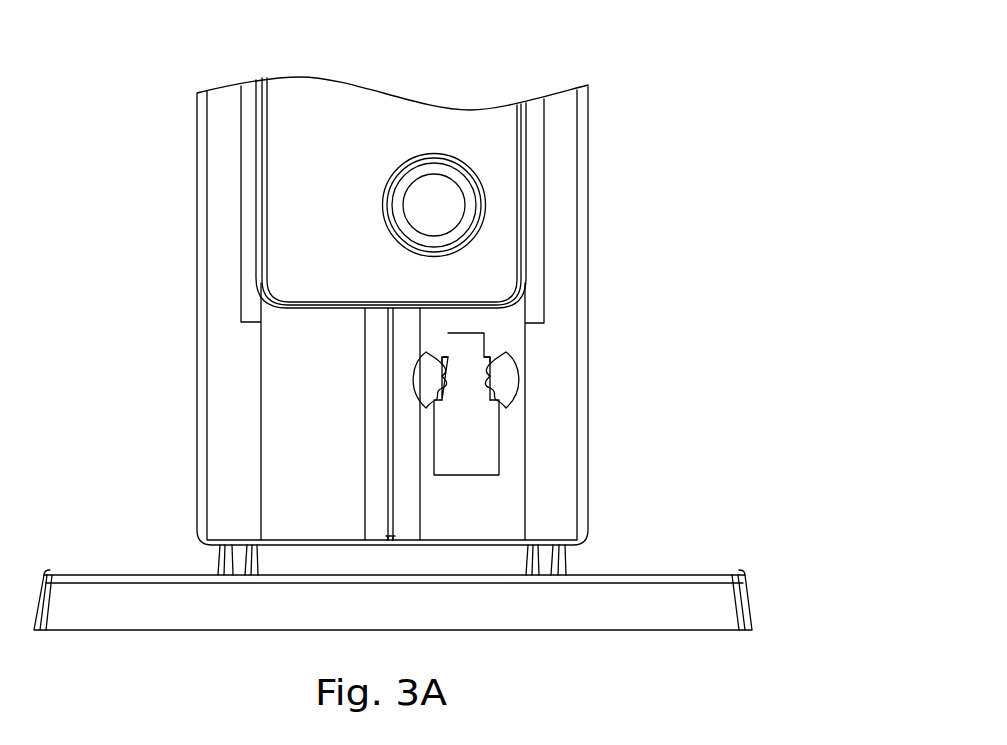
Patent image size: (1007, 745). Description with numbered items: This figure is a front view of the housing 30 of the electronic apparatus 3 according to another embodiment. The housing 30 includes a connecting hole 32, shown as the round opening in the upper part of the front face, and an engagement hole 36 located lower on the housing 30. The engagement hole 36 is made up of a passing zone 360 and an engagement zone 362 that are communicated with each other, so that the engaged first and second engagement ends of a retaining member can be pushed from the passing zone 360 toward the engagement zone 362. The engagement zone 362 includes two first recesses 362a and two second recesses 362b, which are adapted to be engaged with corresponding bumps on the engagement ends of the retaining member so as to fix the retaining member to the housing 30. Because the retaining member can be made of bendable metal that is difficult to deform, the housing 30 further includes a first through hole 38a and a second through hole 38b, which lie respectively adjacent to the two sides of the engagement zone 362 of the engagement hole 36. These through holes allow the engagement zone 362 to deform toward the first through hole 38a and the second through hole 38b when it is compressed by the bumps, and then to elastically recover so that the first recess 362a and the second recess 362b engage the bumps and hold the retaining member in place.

The electronic apparatus 3 is at (622, 84).
The housing 30 is at (588, 237).
The connecting hole 32 is at (486, 207).
The engagement hole 36 is at (700, 285).
The passing zone 360 is at (500, 443).
The engagement zone 362 is at (490, 343).
The first recess 362a is at (441, 352).
The second recess 362b is at (506, 352).
The first through hole 38a is at (415, 397).
The second through hole 38b is at (495, 398).